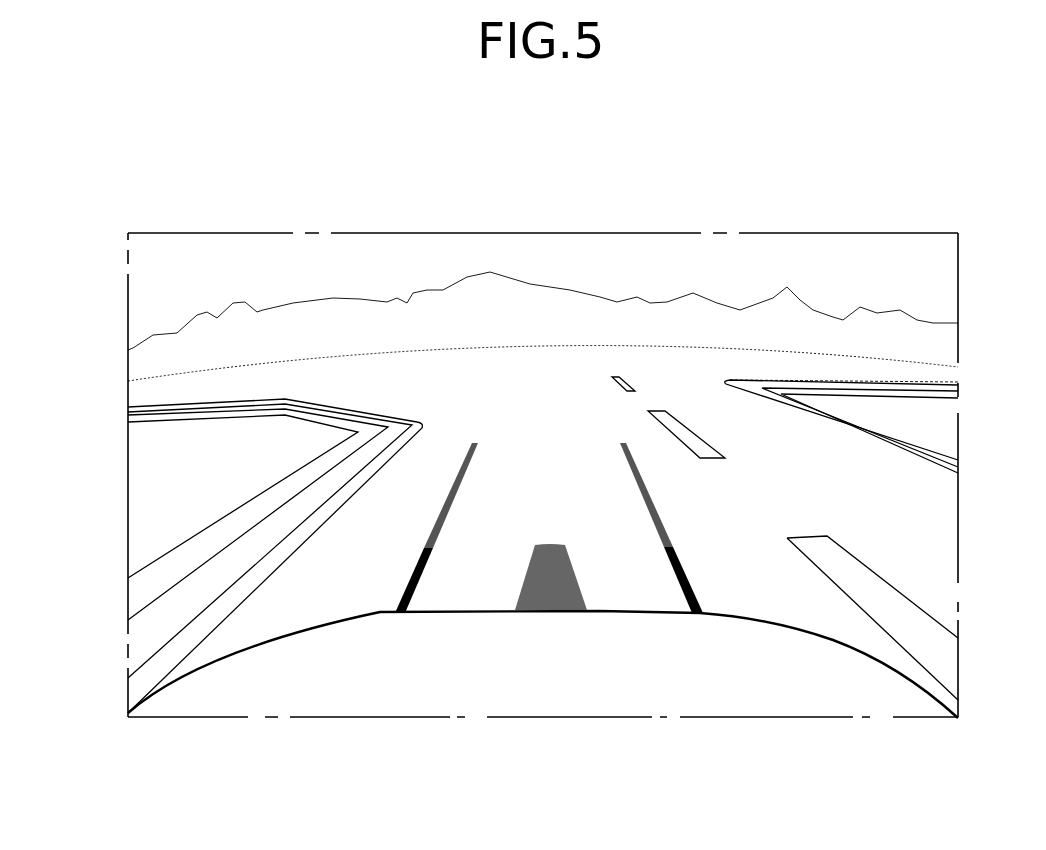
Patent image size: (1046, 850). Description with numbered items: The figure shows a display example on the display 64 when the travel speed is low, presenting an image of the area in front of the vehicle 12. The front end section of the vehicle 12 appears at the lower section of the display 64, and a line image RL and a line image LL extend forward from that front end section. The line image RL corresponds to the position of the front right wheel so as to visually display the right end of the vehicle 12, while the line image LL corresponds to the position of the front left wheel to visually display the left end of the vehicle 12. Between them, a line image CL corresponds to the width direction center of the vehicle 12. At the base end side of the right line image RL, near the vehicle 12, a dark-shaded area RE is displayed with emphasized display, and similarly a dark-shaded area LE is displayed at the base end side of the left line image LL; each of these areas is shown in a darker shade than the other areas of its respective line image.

The display 64 is at (280, 233).
The vehicle 12 is at (220, 662).
The line image LL is at (463, 478).
The line image RL is at (637, 457).
The dark-shaded area LE is at (400, 587).
The dark-shaded area RE is at (680, 583).
The line image CL is at (523, 580).